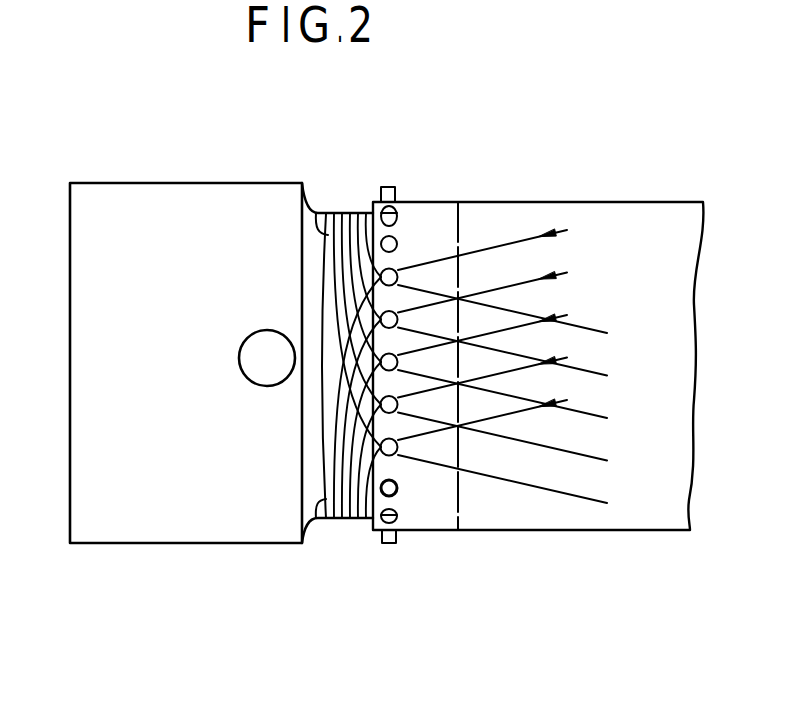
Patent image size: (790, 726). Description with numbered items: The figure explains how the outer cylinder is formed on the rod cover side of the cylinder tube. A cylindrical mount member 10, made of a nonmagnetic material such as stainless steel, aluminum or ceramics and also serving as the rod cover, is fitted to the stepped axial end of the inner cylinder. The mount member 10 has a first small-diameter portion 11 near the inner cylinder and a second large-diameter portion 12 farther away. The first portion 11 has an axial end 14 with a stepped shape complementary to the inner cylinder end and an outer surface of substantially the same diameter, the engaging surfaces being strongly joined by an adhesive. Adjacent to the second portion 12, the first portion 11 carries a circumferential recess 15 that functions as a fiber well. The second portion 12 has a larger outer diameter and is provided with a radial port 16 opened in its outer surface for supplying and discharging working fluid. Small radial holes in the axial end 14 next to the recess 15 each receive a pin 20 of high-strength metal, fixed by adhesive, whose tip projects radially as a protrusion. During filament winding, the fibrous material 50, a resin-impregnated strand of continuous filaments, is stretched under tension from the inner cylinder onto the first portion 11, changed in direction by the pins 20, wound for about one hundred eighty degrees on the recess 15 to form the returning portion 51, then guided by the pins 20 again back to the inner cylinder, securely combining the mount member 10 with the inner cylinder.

The mount member 10 is at (402, 163).
The first small-diameter portion 11 is at (440, 213).
The second large-diameter portion 12 is at (168, 194).
The axial end 14 is at (438, 512).
The circumferential recess 15 is at (313, 523).
The radial port 16 is at (267, 365).
The pin 20 is at (398, 543).
The fibrous material 50 is at (530, 233).
The returning portion 51 is at (318, 205).